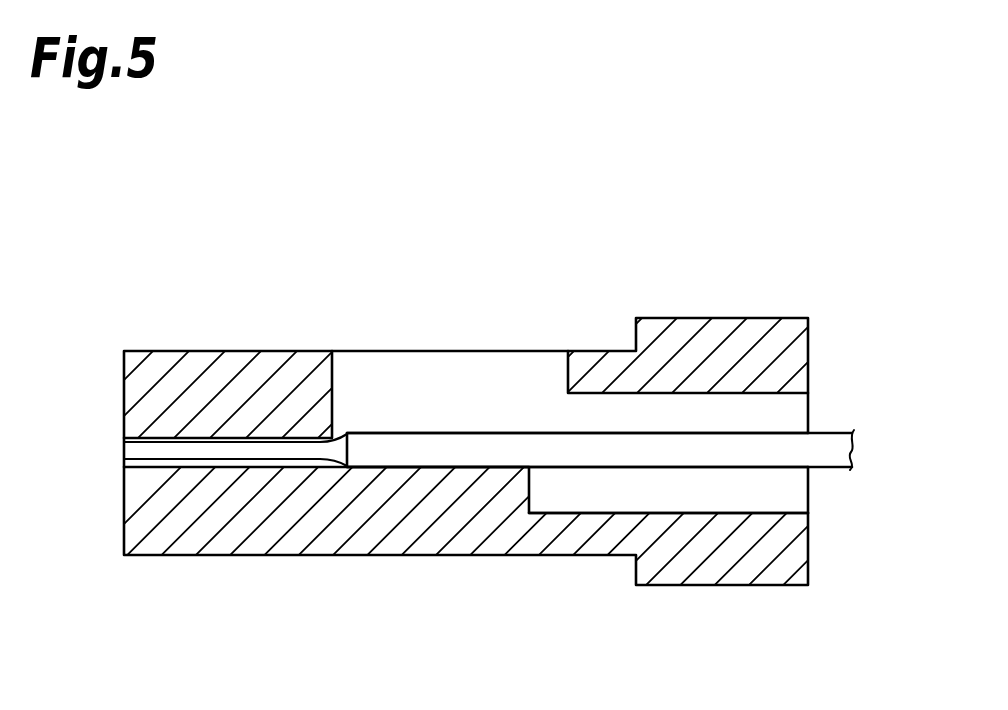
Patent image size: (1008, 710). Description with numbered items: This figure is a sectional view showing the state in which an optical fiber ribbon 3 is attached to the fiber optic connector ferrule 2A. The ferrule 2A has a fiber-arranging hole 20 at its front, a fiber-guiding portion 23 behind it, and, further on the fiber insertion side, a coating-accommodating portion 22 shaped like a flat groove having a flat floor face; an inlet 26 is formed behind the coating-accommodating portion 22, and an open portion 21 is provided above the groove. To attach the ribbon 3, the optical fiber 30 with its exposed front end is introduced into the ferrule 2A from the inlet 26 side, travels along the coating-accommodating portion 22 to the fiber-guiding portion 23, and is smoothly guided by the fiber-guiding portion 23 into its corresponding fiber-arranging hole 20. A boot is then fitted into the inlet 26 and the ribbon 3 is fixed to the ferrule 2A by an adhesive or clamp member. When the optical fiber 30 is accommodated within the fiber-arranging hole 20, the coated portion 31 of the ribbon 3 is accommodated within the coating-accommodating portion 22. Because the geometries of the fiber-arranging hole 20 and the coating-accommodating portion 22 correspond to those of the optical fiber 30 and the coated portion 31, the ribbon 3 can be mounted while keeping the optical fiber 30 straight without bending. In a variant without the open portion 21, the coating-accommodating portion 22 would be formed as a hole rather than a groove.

The fiber optic connector ferrule 2A is at (751, 283).
The fiber-arranging hole 20 is at (200, 436).
The open portion 21 is at (472, 365).
The coating-accommodating portion 22 is at (402, 470).
The fiber-guiding portion 23 is at (317, 450).
The inlet 26 is at (795, 482).
The optical fiber ribbon 3 is at (831, 425).
The optical fiber 30 is at (168, 458).
The coated portion 31 is at (580, 458).